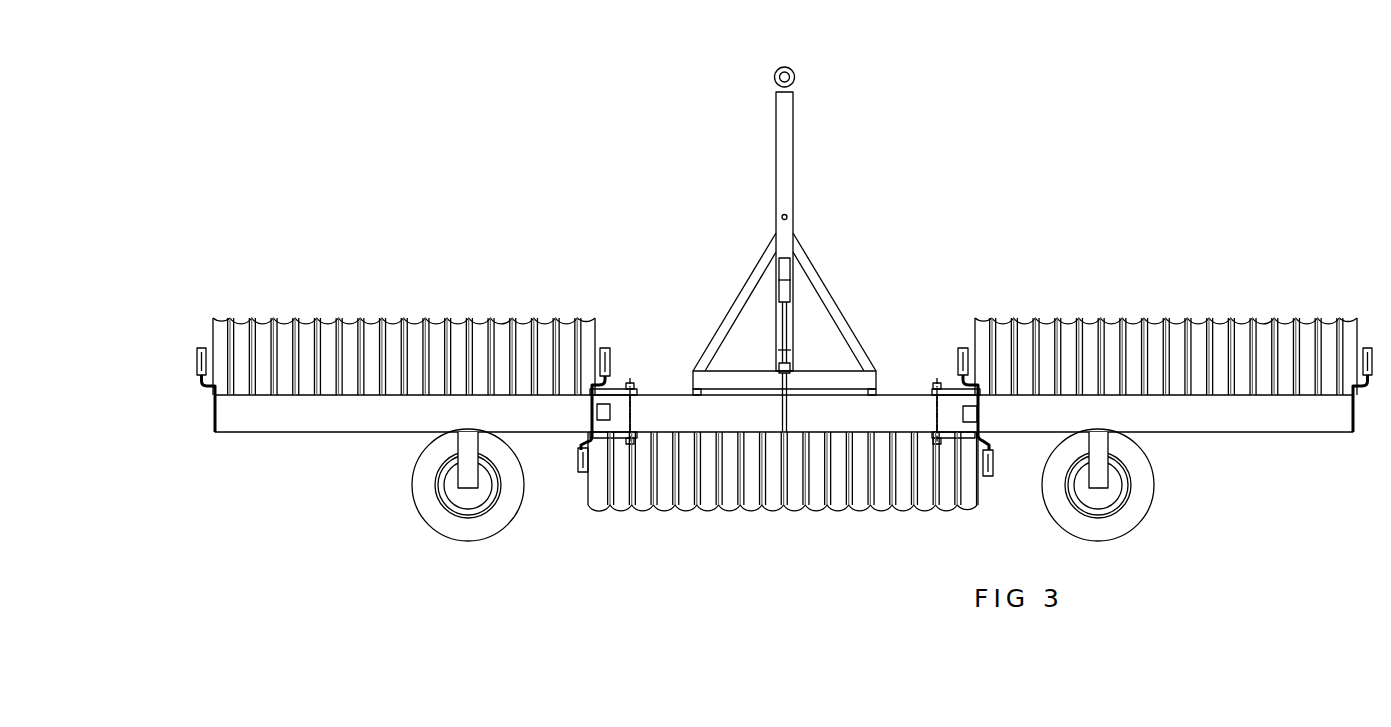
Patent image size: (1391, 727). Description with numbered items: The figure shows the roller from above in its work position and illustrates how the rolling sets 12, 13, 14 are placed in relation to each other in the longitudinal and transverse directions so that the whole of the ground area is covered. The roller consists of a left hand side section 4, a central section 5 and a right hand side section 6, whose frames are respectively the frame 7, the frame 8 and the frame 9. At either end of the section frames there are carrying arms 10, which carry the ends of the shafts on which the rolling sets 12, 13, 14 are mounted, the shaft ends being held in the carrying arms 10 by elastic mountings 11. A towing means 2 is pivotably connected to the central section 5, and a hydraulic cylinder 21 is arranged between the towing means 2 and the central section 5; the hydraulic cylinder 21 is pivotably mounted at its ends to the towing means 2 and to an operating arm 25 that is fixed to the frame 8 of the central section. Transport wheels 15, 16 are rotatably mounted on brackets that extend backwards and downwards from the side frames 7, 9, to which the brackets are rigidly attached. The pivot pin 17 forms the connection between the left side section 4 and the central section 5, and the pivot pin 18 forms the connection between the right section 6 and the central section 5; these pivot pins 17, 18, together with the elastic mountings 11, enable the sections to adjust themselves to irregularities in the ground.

The towing means 2 is at (790, 168).
The left hand side section 4 is at (404, 314).
The central section 5 is at (783, 510).
The right hand side section 6 is at (1166, 314).
The frame 7 is at (287, 418).
The frame 8 is at (900, 412).
The frame 9 is at (1223, 412).
The carrying arms 10 is at (206, 388).
The elastic mountings 11 is at (202, 348).
The rolling set 12 is at (427, 350).
The rolling set 13 is at (782, 470).
The rolling set 14 is at (1142, 350).
The transport wheel 15 is at (425, 481).
The transport wheel 16 is at (1137, 508).
The pivot pin 17 is at (633, 383).
The pivot pin 18 is at (937, 389).
The hydraulic cylinder 21 is at (790, 308).
The operating arm 25 is at (790, 392).